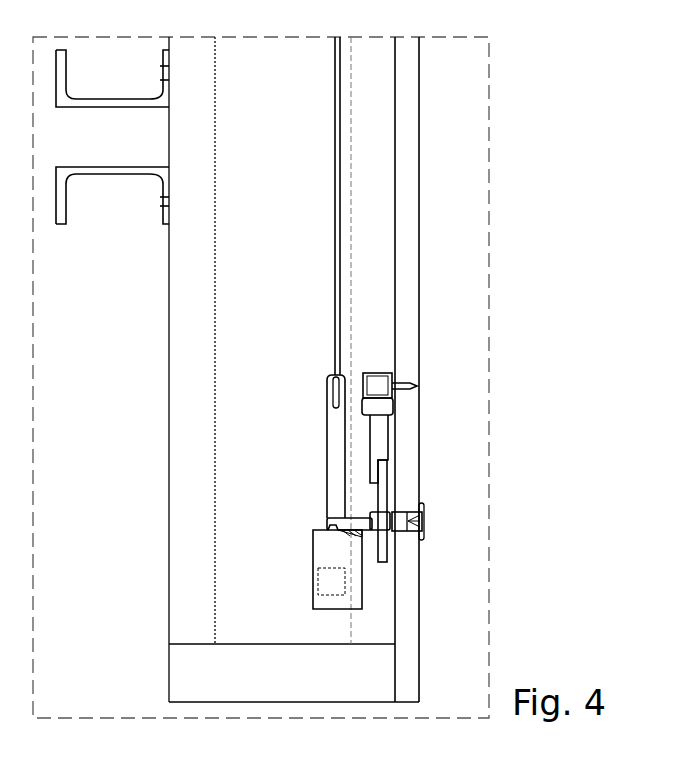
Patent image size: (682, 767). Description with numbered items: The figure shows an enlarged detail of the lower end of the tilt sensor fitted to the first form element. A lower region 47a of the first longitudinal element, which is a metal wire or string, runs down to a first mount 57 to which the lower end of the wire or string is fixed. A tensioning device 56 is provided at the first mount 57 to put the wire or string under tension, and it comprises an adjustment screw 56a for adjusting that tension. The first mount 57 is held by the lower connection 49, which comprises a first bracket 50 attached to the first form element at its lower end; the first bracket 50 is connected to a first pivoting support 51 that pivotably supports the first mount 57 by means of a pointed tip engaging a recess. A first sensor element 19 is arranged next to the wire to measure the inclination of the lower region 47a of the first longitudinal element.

The first sensor element 19 is at (436, 595).
The lower region of the first longitudinal element 47a is at (454, 206).
The lower connection 49 is at (443, 537).
The first bracket 50 is at (476, 513).
The first pivoting support 51 is at (449, 536).
The tensioning device 56 is at (461, 428).
The adjustment screw 56a is at (482, 365).
The first mount 57 is at (443, 446).